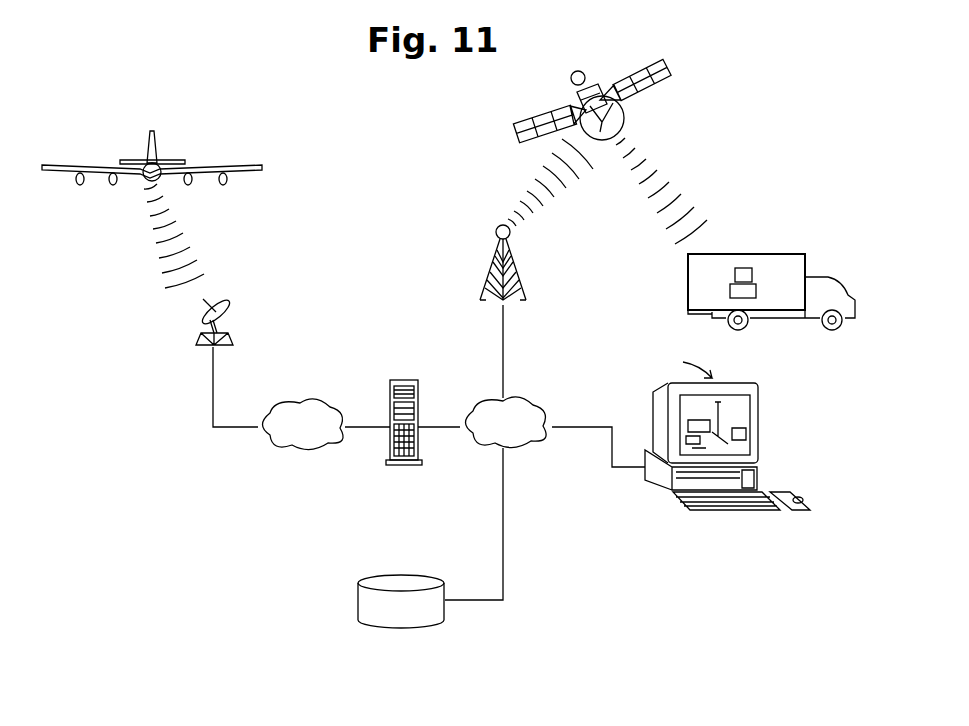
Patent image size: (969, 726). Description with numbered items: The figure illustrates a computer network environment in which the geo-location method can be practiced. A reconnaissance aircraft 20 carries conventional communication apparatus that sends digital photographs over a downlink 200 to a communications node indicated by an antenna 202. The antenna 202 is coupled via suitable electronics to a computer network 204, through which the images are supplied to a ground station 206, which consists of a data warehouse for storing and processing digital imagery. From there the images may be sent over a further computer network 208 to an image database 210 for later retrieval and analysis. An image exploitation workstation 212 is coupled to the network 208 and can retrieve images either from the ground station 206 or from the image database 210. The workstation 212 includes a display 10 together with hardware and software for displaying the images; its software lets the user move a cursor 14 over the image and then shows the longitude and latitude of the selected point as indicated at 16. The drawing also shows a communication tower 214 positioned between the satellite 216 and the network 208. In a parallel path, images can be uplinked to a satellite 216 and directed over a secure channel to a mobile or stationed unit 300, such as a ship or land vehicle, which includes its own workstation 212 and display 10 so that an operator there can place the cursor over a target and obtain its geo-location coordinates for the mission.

The display 10 is at (732, 268).
The cursor 14 is at (727, 436).
The geo-location coordinate display 16 is at (668, 470).
The reconnaissance aircraft 20 is at (213, 166).
The downlink 200 is at (195, 268).
The antenna 202 is at (224, 322).
The computer network 204 is at (306, 400).
The ground station 206 is at (403, 380).
The computer network 208 is at (534, 400).
The image database 210 is at (448, 614).
The image exploitation workstation 212 is at (758, 287).
The communication tower 214 is at (522, 288).
The satellite 216 is at (598, 84).
The mobile or stationed unit 300 is at (823, 265).